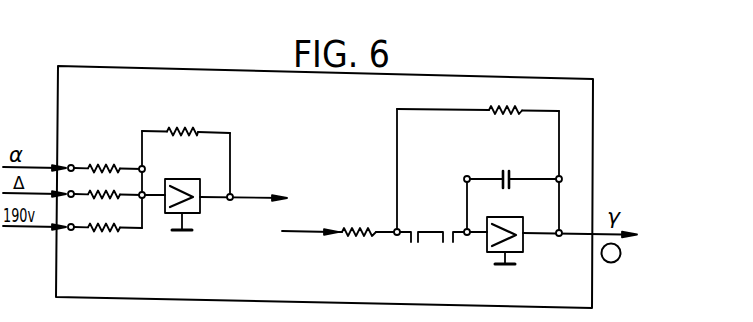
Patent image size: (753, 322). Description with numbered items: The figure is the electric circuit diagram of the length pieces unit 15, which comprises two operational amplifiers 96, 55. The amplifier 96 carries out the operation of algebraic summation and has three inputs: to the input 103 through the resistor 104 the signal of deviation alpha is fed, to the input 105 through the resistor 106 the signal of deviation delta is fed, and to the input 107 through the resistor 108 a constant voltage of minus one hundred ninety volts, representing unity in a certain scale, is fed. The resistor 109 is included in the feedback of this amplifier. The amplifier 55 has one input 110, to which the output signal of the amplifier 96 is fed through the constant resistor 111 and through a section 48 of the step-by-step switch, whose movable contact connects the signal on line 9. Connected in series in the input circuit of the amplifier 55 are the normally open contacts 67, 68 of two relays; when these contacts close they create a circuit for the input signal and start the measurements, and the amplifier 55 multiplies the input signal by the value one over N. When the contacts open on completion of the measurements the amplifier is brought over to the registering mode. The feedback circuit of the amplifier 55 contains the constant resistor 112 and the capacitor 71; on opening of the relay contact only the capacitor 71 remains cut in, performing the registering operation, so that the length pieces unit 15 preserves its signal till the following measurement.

The length pieces unit 15 is at (583, 86).
The section of the step-by-step switch 48 is at (255, 214).
The signal line 9 is at (292, 243).
The amplifier 55 is at (507, 217).
The normally open contact 67 is at (414, 225).
The normally open contact 68 is at (449, 225).
The capacitor 71 is at (513, 189).
The amplifier 96 is at (184, 179).
The input 103 is at (42, 156).
The resistor 104 is at (108, 157).
The input 105 is at (40, 183).
The resistor 106 is at (108, 184).
The input 107 is at (42, 215).
The resistor 108 is at (108, 216).
The resistor 109 is at (186, 150).
The input 110 is at (327, 218).
The constant resistor 111 is at (369, 220).
The constant resistor 112 is at (478, 157).